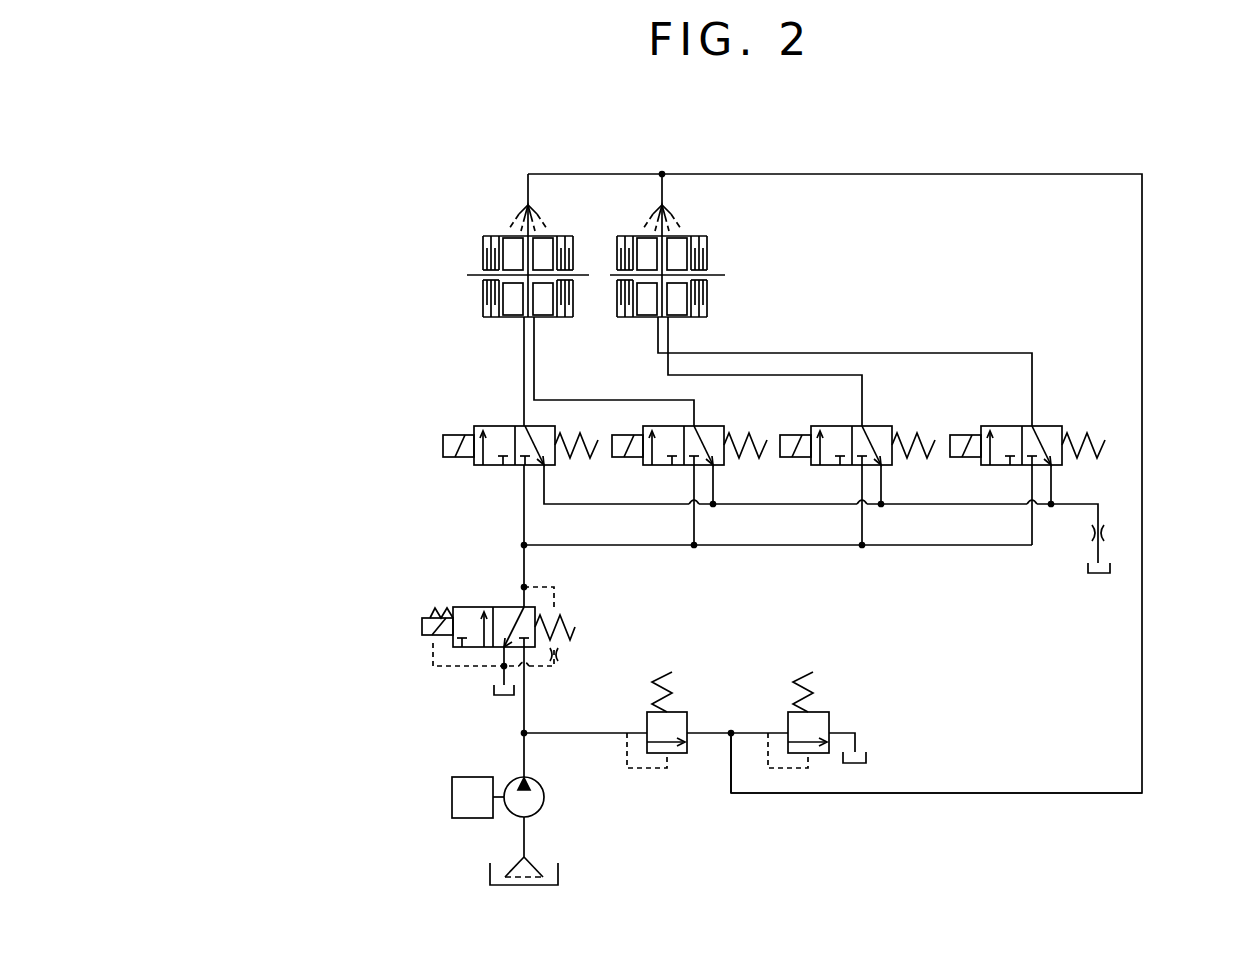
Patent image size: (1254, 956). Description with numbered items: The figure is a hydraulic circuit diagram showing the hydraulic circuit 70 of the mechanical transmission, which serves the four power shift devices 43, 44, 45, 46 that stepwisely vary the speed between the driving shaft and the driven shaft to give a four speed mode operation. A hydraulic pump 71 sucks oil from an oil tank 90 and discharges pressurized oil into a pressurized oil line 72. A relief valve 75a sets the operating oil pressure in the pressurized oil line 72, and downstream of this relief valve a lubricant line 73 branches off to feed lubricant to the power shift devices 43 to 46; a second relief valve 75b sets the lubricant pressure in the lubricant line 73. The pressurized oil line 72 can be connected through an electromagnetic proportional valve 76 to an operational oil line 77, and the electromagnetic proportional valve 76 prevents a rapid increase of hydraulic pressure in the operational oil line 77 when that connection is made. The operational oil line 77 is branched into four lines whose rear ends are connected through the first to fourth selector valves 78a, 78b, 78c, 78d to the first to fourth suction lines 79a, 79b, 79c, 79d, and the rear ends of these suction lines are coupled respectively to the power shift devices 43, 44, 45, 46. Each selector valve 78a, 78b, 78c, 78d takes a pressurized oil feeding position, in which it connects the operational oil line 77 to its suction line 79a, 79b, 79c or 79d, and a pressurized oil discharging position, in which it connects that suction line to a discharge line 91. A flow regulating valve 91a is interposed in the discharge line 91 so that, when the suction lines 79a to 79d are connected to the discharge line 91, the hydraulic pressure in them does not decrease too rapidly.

The power shift device 43 is at (478, 217).
The power shift device 44 is at (590, 225).
The power shift device 45 is at (622, 228).
The power shift device 46 is at (708, 228).
The hydraulic circuit 70 is at (430, 560).
The hydraulic pump 71 is at (535, 800).
The pressurized oil line 72 is at (522, 745).
The lubricant line 73 is at (985, 795).
The relief valve 75a is at (687, 712).
The relief valve 75b is at (829, 712).
The electromagnetic proportional valve 76 is at (462, 606).
The operational oil line 77 is at (522, 523).
The first selector valve 78a is at (490, 467).
The second selector valve 78b is at (660, 467).
The third selector valve 78c is at (828, 467).
The fourth selector valve 78d is at (1000, 467).
The first suction line 79a is at (523, 388).
The second suction line 79b is at (539, 380).
The third suction line 79c is at (657, 340).
The fourth suction line 79d is at (763, 353).
The oil tank 90 is at (558, 885).
The discharge line 91 is at (952, 506).
The flow regulating valve 91a is at (1108, 533).